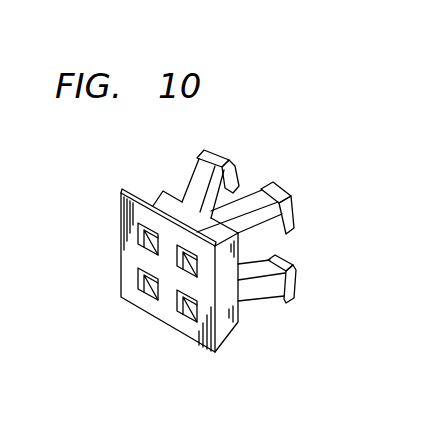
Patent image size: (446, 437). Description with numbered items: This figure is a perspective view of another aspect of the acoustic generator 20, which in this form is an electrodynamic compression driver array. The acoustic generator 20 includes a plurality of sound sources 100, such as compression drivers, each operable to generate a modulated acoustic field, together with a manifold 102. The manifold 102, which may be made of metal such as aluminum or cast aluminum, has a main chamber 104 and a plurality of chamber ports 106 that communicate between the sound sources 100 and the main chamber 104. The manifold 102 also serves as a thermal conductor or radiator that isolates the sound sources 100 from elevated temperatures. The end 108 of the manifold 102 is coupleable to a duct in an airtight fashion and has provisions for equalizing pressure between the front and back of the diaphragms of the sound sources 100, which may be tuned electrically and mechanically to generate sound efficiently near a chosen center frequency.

The acoustic generator 20 is at (86, 181).
The sound sources 100 is at (220, 157).
The manifold 102 is at (165, 281).
The main chamber 104 is at (185, 312).
The chamber ports 106 is at (190, 184).
The end of the manifold 108 is at (125, 271).